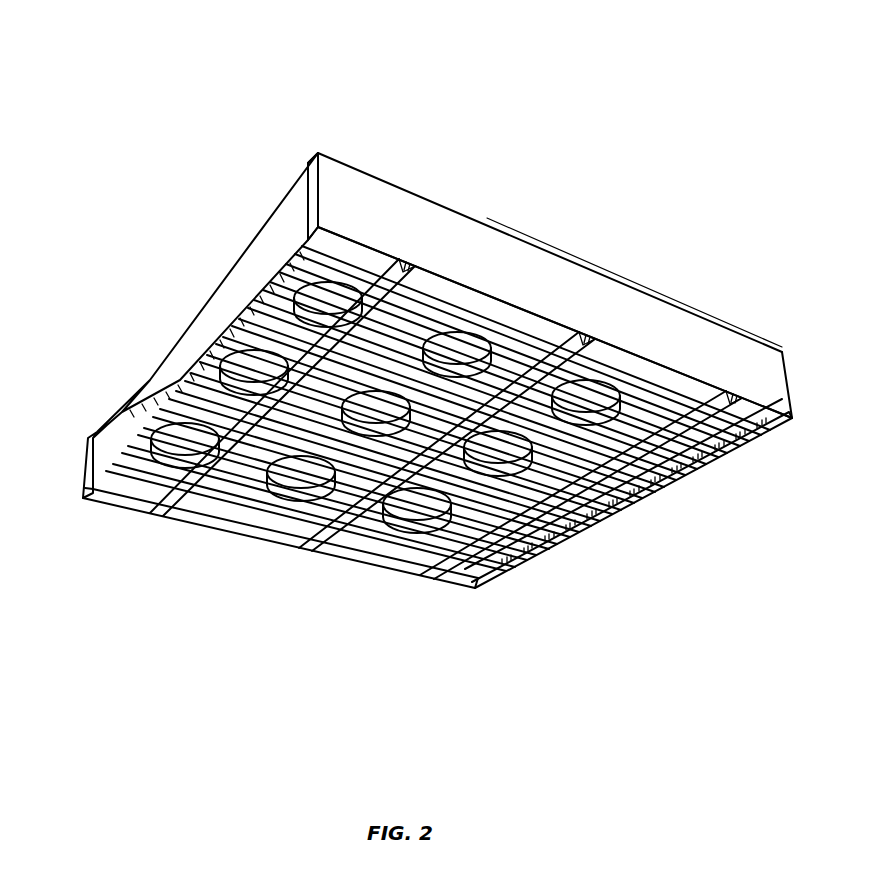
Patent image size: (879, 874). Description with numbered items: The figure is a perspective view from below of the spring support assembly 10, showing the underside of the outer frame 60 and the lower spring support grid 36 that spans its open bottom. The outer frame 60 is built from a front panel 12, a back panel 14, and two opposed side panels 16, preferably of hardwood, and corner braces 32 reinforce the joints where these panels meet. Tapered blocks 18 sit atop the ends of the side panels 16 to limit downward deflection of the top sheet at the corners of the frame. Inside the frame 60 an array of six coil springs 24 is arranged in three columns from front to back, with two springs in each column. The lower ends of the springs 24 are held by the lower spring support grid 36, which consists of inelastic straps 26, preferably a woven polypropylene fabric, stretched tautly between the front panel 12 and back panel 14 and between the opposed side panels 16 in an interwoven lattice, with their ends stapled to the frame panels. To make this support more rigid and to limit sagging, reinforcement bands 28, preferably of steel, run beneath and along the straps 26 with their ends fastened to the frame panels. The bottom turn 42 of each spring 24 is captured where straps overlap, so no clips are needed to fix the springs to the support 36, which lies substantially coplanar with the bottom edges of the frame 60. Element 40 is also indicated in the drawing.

The spring support assembly 10 is at (660, 88).
The front panel 12 is at (547, 267).
The back panel 14 is at (230, 533).
The side panels 16 is at (217, 318).
The tapered blocks 18 is at (290, 190).
The coil springs 24 is at (355, 322).
The inelastic straps 26 is at (235, 330).
The reinforcement bands 28 is at (440, 325).
The corner braces 32 is at (308, 250).
The lower spring support grid 36 is at (580, 540).
The recess 40 is at (575, 300).
The bottom turn 42 is at (365, 517).
The outer frame 60 is at (318, 152).